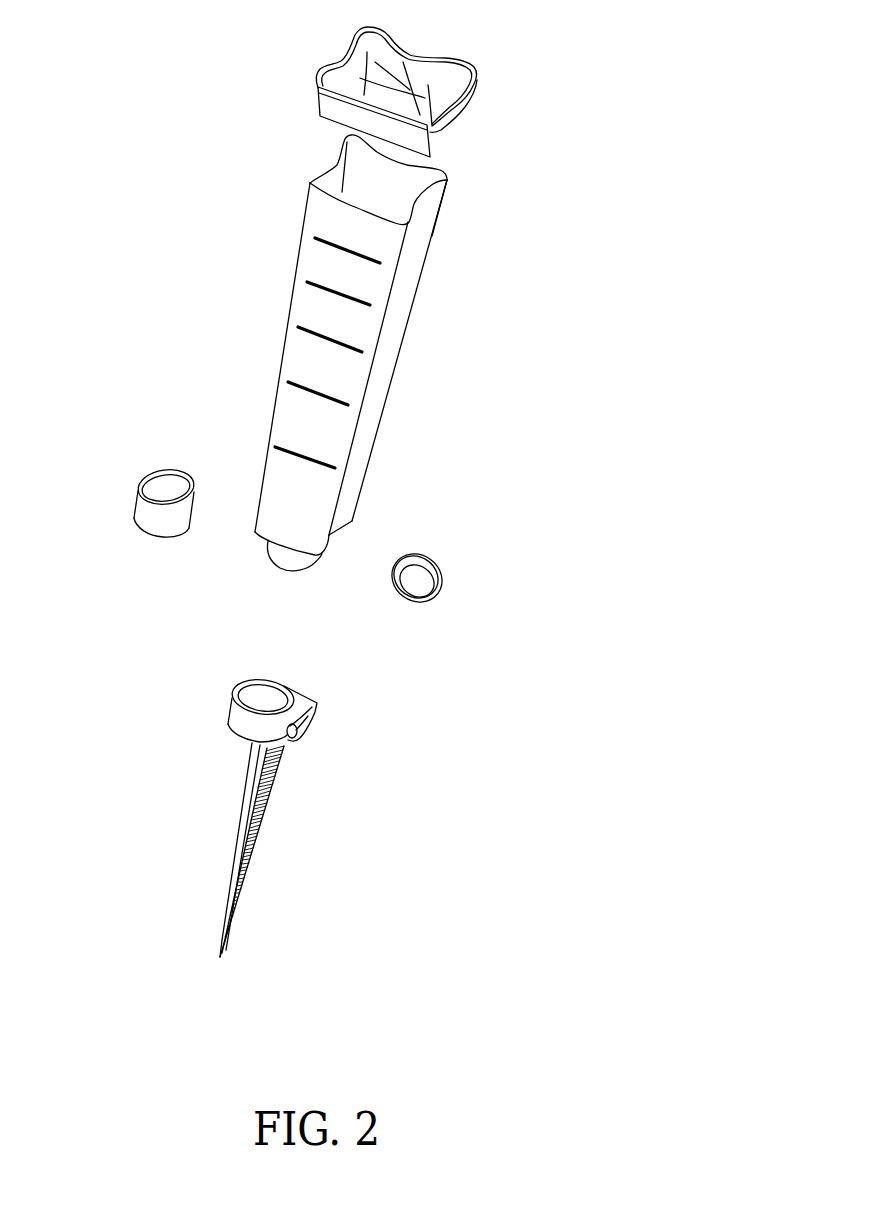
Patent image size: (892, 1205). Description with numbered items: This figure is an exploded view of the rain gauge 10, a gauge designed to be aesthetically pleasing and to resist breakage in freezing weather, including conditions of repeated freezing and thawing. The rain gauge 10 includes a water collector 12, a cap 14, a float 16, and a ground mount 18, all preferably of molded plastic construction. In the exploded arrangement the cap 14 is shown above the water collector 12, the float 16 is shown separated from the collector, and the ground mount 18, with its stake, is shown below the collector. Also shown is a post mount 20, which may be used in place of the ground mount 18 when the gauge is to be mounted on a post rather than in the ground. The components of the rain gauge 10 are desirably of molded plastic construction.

The rain gauge 10 is at (163, 168).
The water collector 12 is at (410, 305).
The cap 14 is at (474, 66).
The float 16 is at (435, 563).
The ground mount 18 is at (310, 727).
The post mount 20 is at (137, 495).